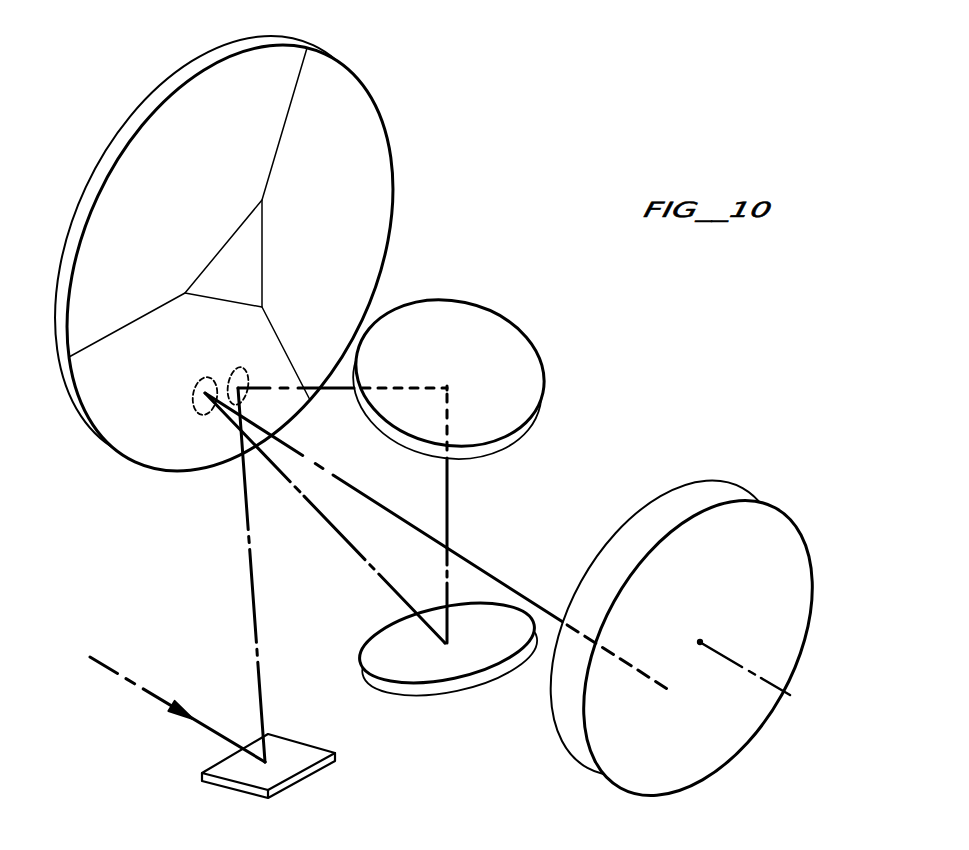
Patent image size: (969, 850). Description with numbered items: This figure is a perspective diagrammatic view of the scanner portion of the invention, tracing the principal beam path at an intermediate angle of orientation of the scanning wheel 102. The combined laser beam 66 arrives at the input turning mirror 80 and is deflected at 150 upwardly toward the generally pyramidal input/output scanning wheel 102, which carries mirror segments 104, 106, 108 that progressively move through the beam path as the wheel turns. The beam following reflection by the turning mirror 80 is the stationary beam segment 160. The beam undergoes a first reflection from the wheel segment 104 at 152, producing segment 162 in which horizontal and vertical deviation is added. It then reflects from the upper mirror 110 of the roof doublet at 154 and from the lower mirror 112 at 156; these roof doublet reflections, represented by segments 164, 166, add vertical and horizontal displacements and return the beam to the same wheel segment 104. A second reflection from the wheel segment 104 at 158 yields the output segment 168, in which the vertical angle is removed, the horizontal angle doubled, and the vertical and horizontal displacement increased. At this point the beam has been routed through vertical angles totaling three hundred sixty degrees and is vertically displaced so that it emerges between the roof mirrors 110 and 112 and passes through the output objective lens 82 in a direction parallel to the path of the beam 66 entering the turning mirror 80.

The input/output scanning wheel 102 is at (392, 125).
The mirror segment 104 is at (202, 348).
The mirror segment 106 is at (175, 202).
The mirror segment 108 is at (360, 227).
The first mirror of the roof mirror assembly 110 is at (547, 397).
The second mirror of the roof mirror assembly 112 is at (470, 681).
The output objective lens 82 is at (745, 497).
The input turning mirror 80 is at (318, 765).
The combined laser beam 66 is at (112, 668).
The deflection point on turning mirror 150 is at (268, 760).
The first reflection point on wheel segment 152 is at (243, 367).
The reflection point on upper roof mirror 154 is at (451, 385).
The reflection point on lower roof mirror 156 is at (440, 645).
The second reflection point on wheel segment 158 is at (193, 407).
The stationary beam segment 160 is at (245, 621).
The beam segment after first wheel reflection 162 is at (323, 390).
The roof doublet beam segment 164 is at (449, 510).
The roof doublet beam segment 166 is at (368, 562).
The output beam segment 168 is at (481, 560).